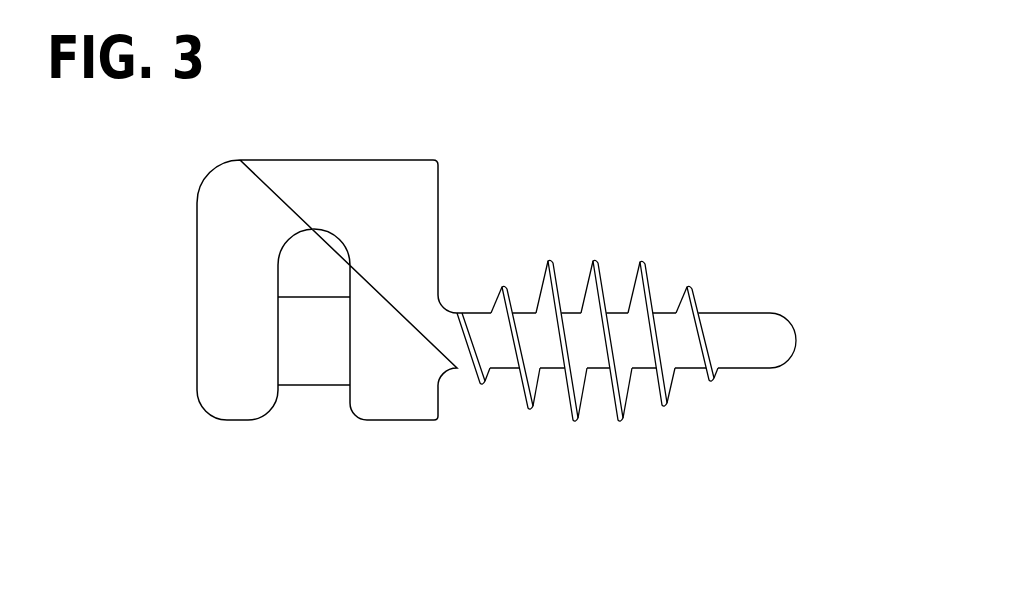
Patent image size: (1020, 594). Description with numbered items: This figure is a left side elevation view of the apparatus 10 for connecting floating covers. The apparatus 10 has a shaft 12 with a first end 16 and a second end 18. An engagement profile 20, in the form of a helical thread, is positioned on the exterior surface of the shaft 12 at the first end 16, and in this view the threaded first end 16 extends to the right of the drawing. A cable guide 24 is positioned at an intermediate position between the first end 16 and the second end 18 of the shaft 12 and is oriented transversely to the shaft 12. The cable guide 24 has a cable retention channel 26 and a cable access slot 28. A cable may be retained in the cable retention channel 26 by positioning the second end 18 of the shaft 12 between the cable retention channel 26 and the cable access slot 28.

The apparatus 10 is at (717, 157).
The shaft 12 is at (450, 362).
The first end 16 is at (795, 337).
The second end 18 is at (293, 340).
The engagement profile 20 is at (668, 402).
The cable guide 24 is at (427, 160).
The cable retention channel 26 is at (299, 266).
The cable access slot 28 is at (307, 398).